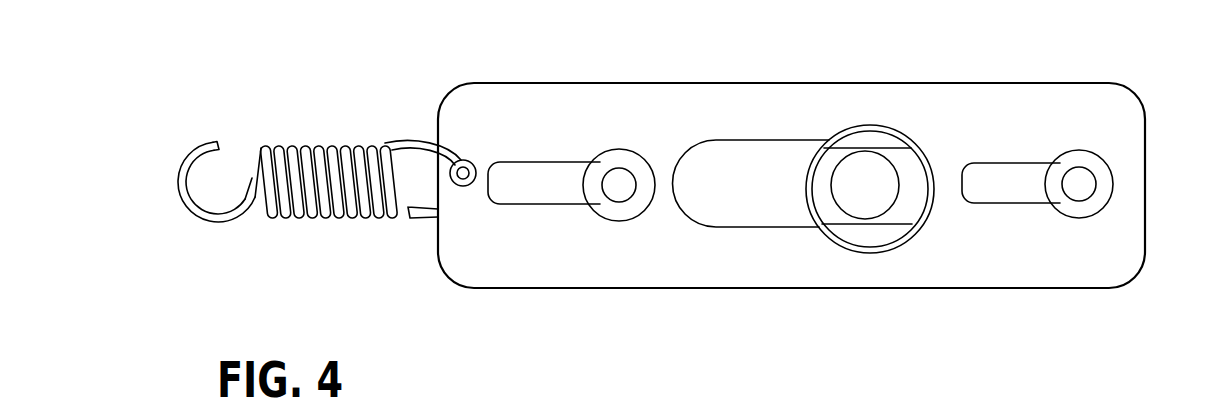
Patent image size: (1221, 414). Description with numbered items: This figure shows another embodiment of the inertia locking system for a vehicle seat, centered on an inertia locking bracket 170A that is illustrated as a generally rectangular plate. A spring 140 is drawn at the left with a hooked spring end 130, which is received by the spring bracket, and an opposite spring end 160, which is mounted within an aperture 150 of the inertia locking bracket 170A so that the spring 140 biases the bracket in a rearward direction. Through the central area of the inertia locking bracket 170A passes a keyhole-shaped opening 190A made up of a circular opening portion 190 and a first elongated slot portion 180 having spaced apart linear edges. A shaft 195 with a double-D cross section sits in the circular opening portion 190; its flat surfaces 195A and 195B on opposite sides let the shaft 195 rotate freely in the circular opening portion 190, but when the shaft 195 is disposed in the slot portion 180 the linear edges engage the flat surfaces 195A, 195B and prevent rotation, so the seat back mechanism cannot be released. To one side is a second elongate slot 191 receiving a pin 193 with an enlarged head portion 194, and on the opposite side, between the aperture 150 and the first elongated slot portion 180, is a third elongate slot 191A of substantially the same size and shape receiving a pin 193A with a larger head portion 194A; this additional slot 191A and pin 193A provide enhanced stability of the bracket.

The spring end 130 is at (210, 143).
The spring 140 is at (333, 142).
The aperture 150 is at (471, 160).
The spring end 160 is at (418, 217).
The inertia locking bracket 170A is at (520, 289).
The first elongated slot portion 180 is at (743, 228).
The circular opening portion 190 is at (873, 257).
The keyhole-shaped opening 190A is at (780, 228).
The second elongate slot 191 is at (1015, 163).
The third elongate slot 191A is at (547, 160).
The pin 193 is at (1083, 185).
The pin 193A is at (620, 178).
The head portion 194 is at (1072, 220).
The head portion 194A is at (633, 219).
The shaft 195 is at (862, 175).
The flat surface 195A is at (883, 148).
The flat surface 195B is at (883, 227).